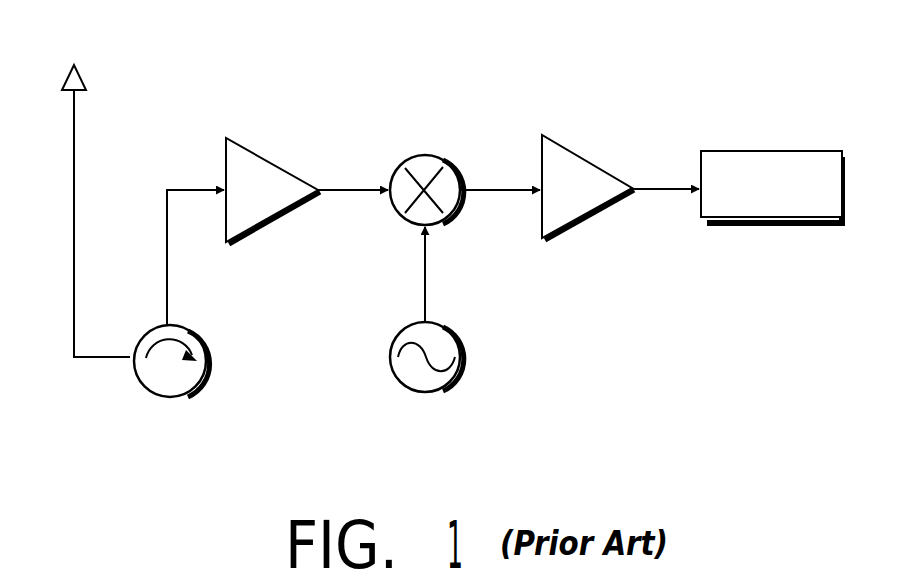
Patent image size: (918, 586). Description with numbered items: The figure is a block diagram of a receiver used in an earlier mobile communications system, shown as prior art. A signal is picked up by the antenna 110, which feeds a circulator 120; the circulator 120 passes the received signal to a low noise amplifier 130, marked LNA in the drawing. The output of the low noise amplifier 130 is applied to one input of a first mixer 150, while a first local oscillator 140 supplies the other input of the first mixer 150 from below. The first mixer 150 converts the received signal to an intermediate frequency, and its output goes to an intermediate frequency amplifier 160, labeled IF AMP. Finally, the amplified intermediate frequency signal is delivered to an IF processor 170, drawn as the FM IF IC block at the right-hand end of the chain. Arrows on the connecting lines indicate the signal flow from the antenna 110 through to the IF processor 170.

The antenna 110 is at (74, 65).
The circulator 120 is at (182, 430).
The low noise amplifier 130 is at (253, 152).
The first local oscillator 140 is at (428, 395).
The first mixer 150 is at (427, 157).
The intermediate frequency amplifier 160 is at (583, 158).
The IF processor 170 is at (758, 148).